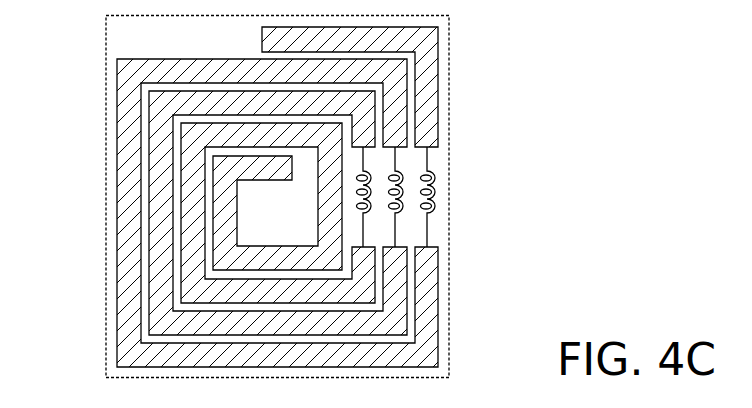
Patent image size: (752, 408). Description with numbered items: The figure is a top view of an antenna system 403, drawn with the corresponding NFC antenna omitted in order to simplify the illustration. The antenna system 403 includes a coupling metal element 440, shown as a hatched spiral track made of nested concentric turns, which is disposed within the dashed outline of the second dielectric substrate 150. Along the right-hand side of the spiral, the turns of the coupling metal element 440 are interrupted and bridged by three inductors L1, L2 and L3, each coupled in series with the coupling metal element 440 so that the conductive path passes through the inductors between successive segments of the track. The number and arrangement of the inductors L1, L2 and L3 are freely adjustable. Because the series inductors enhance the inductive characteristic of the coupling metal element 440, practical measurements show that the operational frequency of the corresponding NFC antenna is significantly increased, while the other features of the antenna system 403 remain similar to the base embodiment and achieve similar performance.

The second dielectric substrate 150 is at (112, 38).
The coupling metal element 440 is at (117, 207).
The antenna system 403 is at (540, 55).
The inductor L1 is at (367, 172).
The inductor L2 is at (398, 226).
The inductor L3 is at (437, 190).